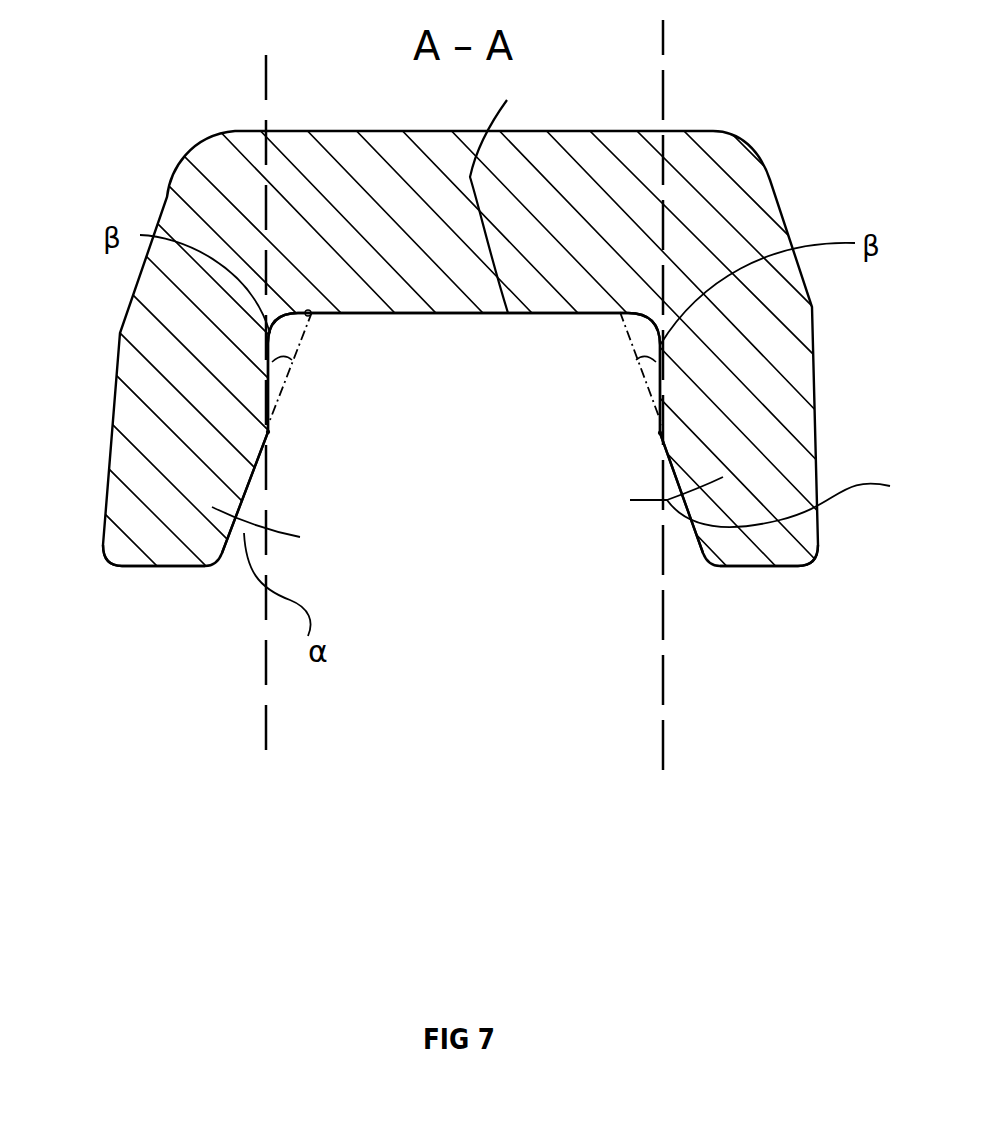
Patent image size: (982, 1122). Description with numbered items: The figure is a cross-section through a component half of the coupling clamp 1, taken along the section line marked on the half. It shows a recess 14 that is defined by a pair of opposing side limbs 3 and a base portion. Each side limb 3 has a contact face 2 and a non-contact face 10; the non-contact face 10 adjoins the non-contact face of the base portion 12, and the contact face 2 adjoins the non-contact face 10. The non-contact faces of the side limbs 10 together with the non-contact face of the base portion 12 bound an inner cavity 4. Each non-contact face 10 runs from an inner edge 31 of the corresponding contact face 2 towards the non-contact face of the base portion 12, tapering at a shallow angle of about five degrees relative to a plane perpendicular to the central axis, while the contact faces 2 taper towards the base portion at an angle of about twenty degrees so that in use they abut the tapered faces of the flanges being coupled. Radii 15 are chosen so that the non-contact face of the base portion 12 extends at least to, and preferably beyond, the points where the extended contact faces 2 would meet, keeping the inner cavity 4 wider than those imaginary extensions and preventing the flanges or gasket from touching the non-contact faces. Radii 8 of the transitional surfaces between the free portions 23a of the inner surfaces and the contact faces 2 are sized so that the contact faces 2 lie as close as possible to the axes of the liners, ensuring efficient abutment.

The coupling clamp 1 is at (578, 150).
The contact face of the side limb 2 is at (257, 477).
The side limb 3 is at (265, 428).
The inner cavity 4 is at (488, 377).
The radii of transitional surfaces 8 is at (215, 567).
The non-contact face of the side limb 10 is at (283, 355).
The non-contact face of the base portion 12 is at (508, 196).
The recess 14 is at (626, 538).
The radii 15 is at (292, 328).
The free portion of the inner surface 23a is at (157, 567).
The inner edge of the contact face 31 is at (270, 430).